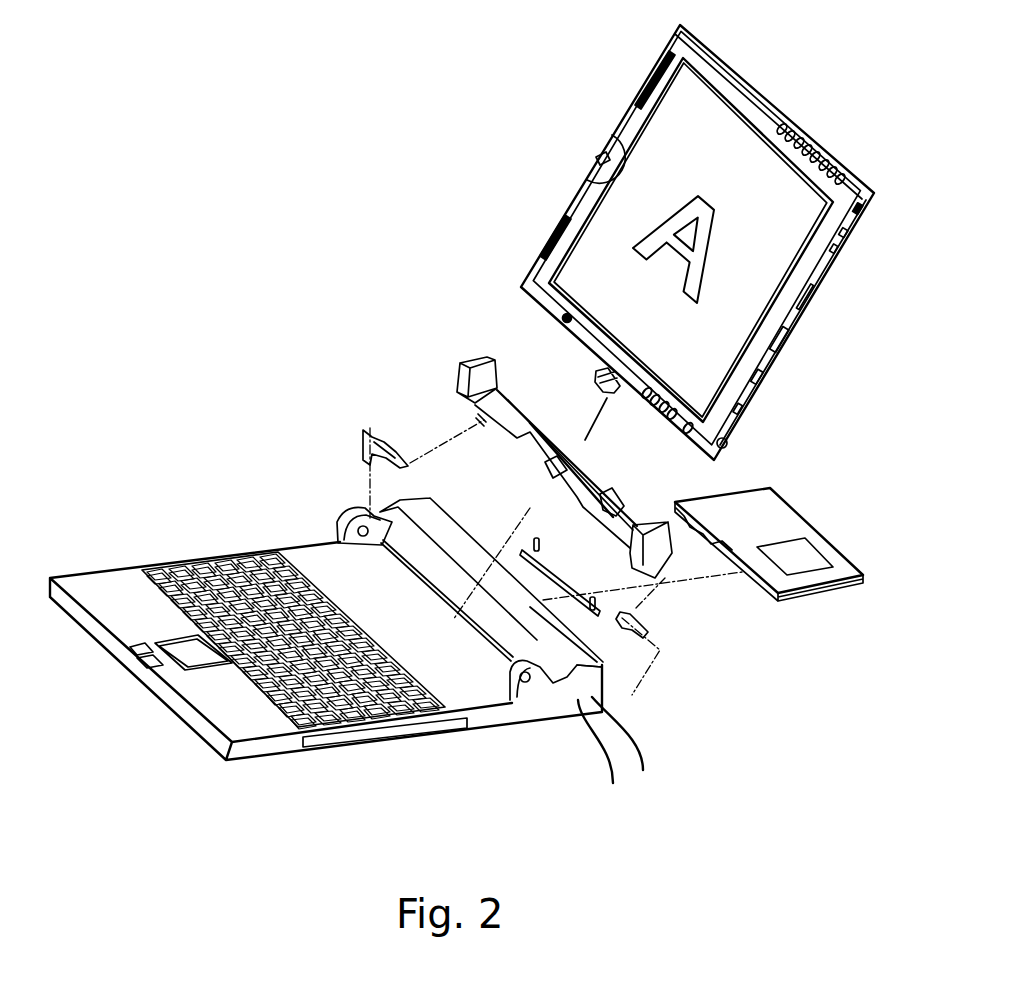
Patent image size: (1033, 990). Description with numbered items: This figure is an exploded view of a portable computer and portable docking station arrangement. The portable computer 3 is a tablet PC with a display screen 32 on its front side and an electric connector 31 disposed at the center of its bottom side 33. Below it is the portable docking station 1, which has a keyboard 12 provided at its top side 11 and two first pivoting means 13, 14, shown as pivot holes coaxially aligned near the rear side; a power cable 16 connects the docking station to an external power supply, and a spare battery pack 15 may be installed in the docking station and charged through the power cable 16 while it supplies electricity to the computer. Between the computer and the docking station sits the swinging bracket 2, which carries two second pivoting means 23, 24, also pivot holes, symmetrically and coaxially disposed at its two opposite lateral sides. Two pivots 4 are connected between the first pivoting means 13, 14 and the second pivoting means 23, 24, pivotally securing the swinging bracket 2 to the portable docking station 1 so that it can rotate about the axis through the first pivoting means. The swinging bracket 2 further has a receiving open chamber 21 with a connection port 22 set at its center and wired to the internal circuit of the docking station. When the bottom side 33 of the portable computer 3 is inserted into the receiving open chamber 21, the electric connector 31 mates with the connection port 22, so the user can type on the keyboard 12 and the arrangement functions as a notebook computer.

The portable docking station 1 is at (257, 732).
The top side 11 is at (197, 700).
The keyboard 12 is at (367, 710).
The first pivoting means 13 is at (526, 703).
The first pivoting means 14 is at (345, 522).
The spare battery pack 15 is at (805, 523).
The power cable 16 is at (600, 737).
The swinging bracket 2 is at (670, 557).
The receiving open chamber 21 is at (607, 497).
The connection port 22 is at (546, 466).
The second pivoting means 23 is at (660, 572).
The second pivoting means 24 is at (480, 422).
The portable computer 3 is at (762, 150).
The electric connector 31 is at (606, 380).
The display screen 32 is at (795, 132).
The bottom side 33 is at (570, 337).
The pivots 4 is at (380, 436).